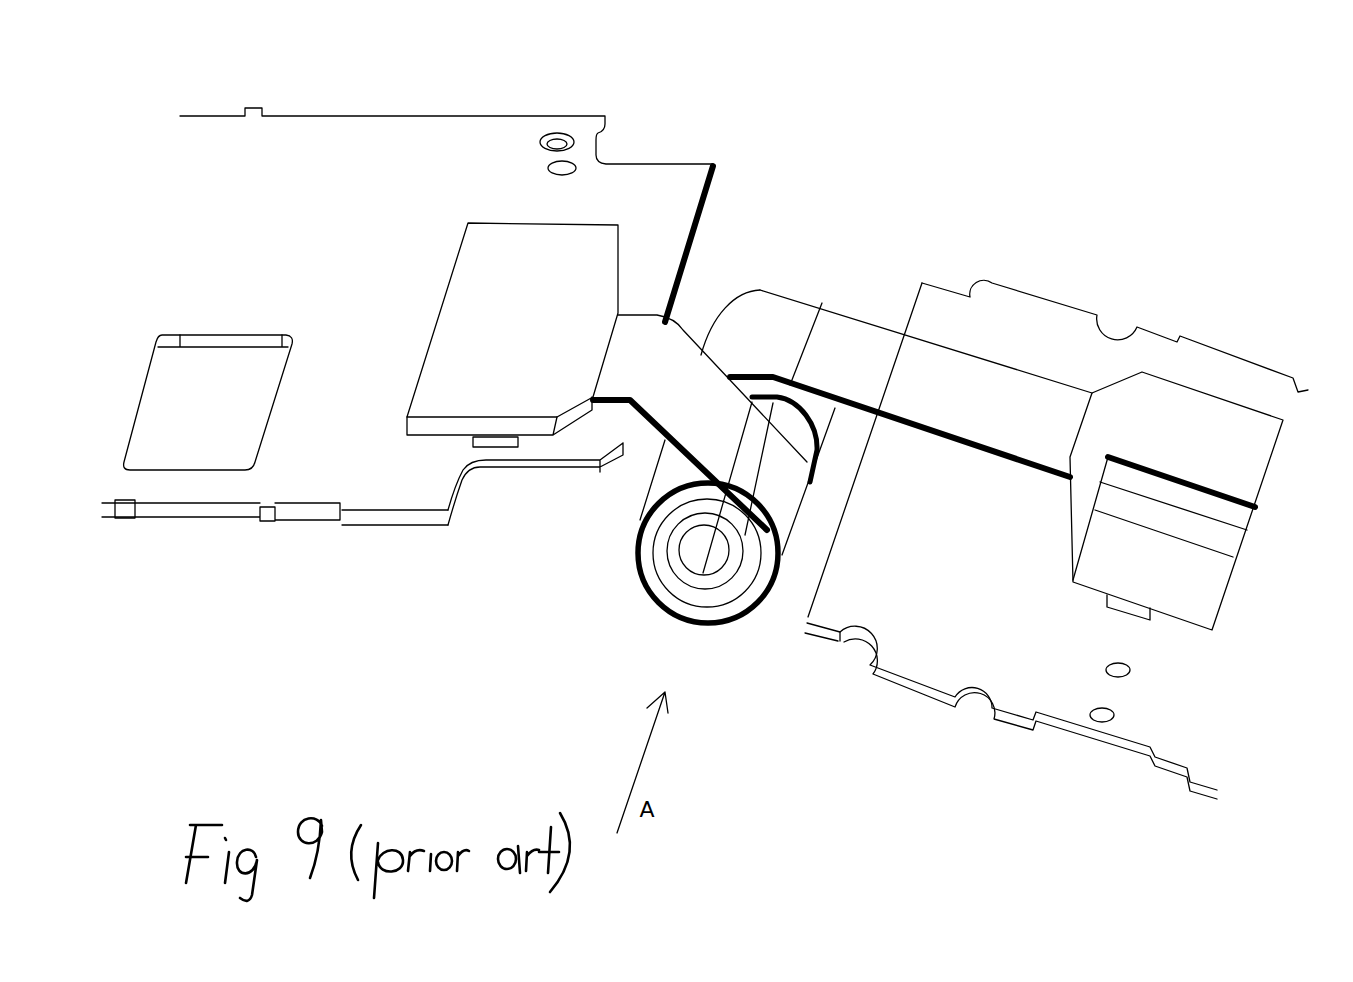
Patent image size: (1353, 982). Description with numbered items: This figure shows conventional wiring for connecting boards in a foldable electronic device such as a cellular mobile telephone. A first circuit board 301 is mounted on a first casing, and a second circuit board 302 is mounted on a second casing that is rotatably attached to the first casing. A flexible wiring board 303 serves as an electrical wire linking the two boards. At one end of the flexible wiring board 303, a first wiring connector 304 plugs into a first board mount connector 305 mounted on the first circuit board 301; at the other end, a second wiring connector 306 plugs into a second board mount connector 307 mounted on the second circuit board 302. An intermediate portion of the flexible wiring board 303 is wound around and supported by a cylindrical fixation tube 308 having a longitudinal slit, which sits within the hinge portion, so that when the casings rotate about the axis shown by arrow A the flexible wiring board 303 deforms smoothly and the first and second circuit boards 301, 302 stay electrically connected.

The first circuit board 301 is at (1248, 372).
The second circuit board 302 is at (340, 130).
The flexible wiring board 303 is at (923, 457).
The first wiring connector 304 is at (1255, 452).
The first board mount connector 305 is at (1152, 618).
The second wiring connector 306 is at (467, 320).
The second board mount connector 307 is at (498, 447).
The fixation tube 308 is at (747, 613).